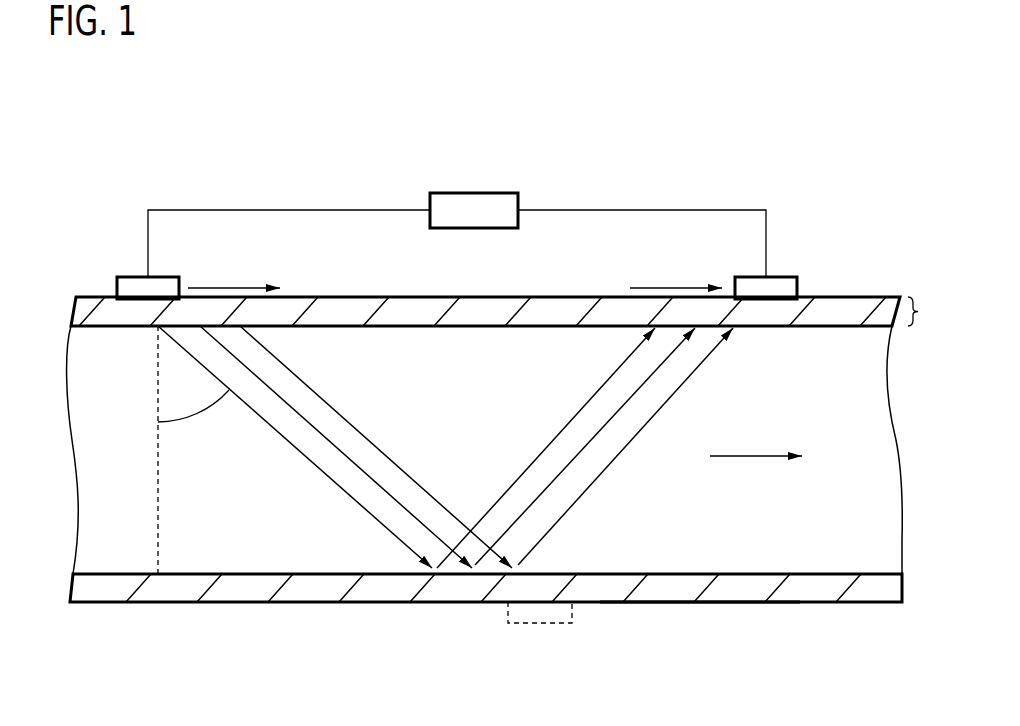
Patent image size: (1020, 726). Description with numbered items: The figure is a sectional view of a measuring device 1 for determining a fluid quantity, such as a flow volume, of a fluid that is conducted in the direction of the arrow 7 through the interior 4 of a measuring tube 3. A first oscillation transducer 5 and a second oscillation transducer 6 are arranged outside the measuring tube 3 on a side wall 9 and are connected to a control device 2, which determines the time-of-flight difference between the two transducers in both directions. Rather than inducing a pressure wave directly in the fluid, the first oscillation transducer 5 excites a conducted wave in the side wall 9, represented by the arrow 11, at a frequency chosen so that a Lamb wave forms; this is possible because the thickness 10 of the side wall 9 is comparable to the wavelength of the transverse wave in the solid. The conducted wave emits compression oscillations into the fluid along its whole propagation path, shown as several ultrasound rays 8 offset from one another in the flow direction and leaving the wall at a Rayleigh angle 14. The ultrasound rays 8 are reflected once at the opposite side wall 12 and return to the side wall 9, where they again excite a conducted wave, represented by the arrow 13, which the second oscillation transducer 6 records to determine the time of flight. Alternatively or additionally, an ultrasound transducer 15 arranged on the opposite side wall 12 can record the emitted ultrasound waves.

The measuring device 1 is at (653, 135).
The control device 2 is at (475, 193).
The measuring tube 3 is at (674, 606).
The interior 4 is at (108, 538).
The first oscillation transducer 5 is at (132, 277).
The second oscillation transducer 6 is at (775, 277).
The arrow 7 is at (742, 458).
The ultrasound ray 8 is at (360, 432).
The side wall 9 is at (347, 312).
The thickness 10 is at (931, 312).
The arrow 11 is at (223, 287).
The opposite side wall 12 is at (749, 588).
The arrow 13 is at (662, 274).
The Rayleigh angle 14 is at (192, 415).
The ultrasound transducer 15 is at (542, 625).